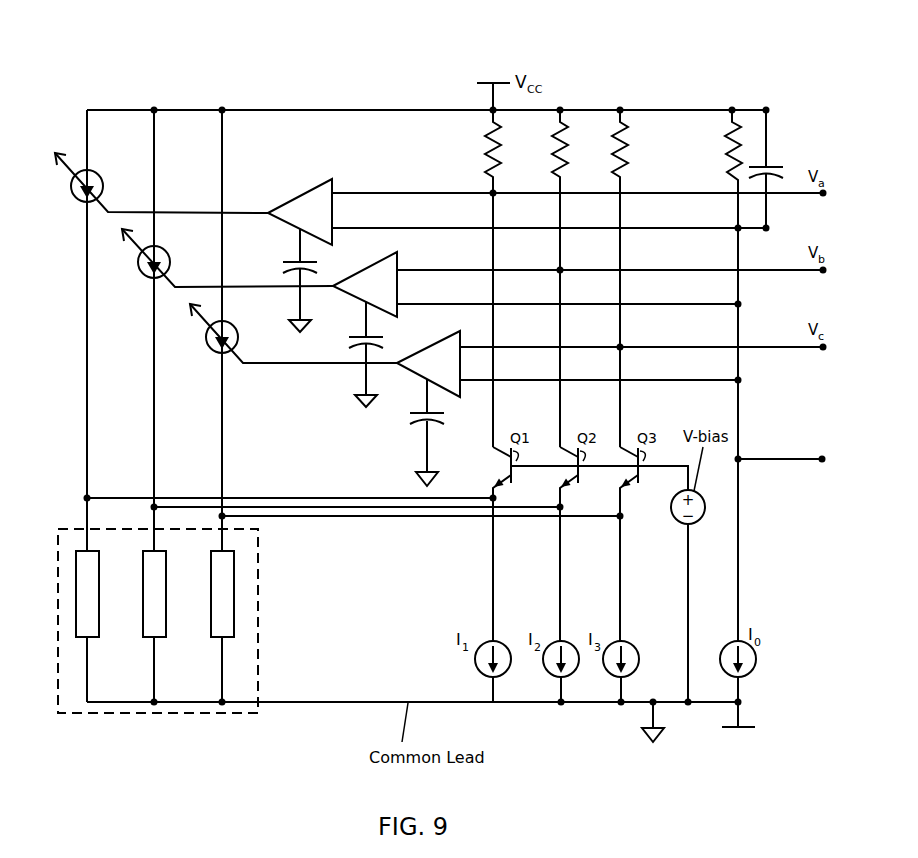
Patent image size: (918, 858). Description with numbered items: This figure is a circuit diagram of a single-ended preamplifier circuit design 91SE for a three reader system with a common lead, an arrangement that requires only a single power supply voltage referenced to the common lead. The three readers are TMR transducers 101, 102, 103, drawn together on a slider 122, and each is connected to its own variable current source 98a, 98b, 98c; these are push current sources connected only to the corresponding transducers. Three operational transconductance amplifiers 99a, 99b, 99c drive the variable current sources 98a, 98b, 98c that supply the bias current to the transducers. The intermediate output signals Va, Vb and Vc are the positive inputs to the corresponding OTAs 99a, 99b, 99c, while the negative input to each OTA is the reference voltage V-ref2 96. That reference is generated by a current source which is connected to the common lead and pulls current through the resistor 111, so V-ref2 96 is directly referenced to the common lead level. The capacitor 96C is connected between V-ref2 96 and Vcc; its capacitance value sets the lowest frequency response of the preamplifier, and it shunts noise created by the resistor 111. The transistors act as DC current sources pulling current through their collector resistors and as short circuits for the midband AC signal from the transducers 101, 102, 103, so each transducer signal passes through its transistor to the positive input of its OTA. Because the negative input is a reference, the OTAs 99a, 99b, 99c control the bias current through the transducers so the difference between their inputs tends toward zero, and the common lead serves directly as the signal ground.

The single-ended preamplifier circuit design 91SE is at (137, 82).
The variable current source 98a is at (98, 176).
The variable current source 98b is at (165, 252).
The variable current source 98c is at (233, 327).
The operational transconductance amplifier 99a is at (302, 192).
The operational transconductance amplifier 99b is at (367, 265).
The operational transconductance amplifier 99c is at (431, 342).
The capacitor 96C is at (770, 163).
The resistor 111 is at (727, 160).
The V-ref2 reference voltage 96 is at (740, 461).
The slider 122 is at (258, 597).
The TMR transducer 101 is at (83, 640).
The TMR transducer 102 is at (150, 640).
The TMR transducer 103 is at (218, 640).